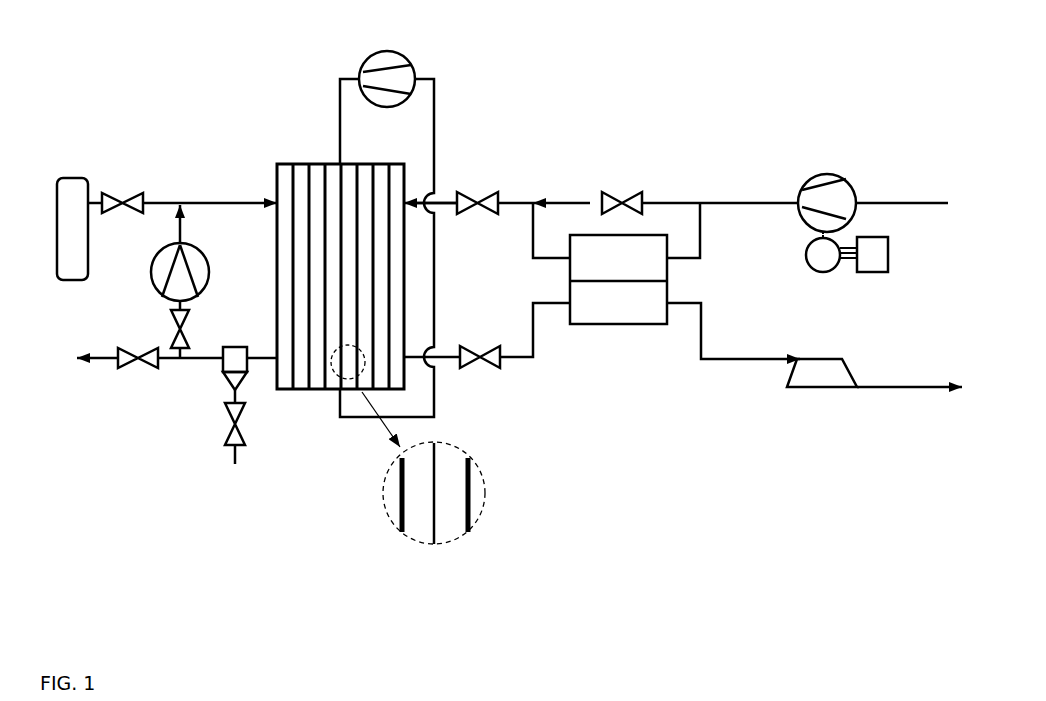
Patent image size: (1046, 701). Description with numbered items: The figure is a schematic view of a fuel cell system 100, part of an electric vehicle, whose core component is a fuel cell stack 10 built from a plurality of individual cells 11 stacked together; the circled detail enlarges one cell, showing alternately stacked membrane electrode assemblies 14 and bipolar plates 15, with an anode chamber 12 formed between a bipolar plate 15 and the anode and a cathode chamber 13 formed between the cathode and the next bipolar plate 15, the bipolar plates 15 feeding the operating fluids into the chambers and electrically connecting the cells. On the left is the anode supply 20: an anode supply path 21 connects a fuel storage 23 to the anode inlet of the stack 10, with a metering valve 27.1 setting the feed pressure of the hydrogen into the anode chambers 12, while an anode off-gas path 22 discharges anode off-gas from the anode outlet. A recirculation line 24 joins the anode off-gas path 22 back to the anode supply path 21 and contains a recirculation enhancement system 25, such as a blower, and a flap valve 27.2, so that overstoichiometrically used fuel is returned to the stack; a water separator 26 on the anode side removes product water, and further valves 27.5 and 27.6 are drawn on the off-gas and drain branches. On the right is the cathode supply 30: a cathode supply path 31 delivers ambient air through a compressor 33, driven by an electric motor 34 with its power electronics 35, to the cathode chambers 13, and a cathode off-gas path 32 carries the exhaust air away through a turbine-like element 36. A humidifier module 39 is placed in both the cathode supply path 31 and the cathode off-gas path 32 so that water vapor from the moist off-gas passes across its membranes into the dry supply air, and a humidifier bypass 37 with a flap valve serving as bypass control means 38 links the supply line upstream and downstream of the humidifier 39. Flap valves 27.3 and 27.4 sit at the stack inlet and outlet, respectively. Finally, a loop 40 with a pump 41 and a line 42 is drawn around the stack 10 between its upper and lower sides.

The fuel cell system 100 is at (588, 75).
The fuel cell stack 10 is at (322, 155).
The individual cell 11 is at (317, 180).
The anode chamber 12 is at (418, 473).
The cathode chamber 13 is at (452, 518).
The membrane electrode assembly 14 is at (436, 542).
The bipolar plate 15 is at (470, 488).
The anode supply 20 is at (218, 152).
The anode supply path 21 is at (192, 200).
The anode off-gas path 22 is at (93, 362).
The fuel storage 23 is at (73, 190).
The recirculation line 24 is at (176, 230).
The recirculation enhancement system 25 is at (200, 280).
The water separator 26 is at (222, 370).
The metering valve 27.1 is at (125, 200).
The flap valve 27.2 is at (172, 330).
The flap valve 27.3 is at (478, 220).
The flap valve 27.4 is at (480, 342).
The valve 27.5 is at (130, 372).
The valve 27.6 is at (244, 423).
The cathode supply 30 is at (530, 178).
The cathode supply path 31 is at (892, 200).
The cathode off-gas path 32 is at (875, 385).
The compressor 33 is at (818, 181).
The electric motor 34 is at (815, 256).
The power electronics 35 is at (890, 257).
The turbine 36 is at (826, 372).
The humidifier bypass 37 is at (670, 200).
The bypass control means 38 is at (612, 196).
The humidifier module 39 is at (628, 310).
The coolant circuit 40 is at (442, 119).
The coolant pump 41 is at (412, 62).
The coolant line 42 is at (437, 176).